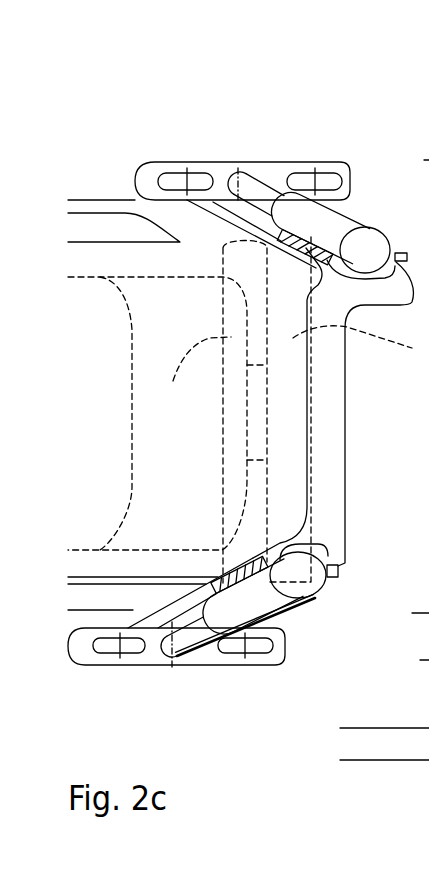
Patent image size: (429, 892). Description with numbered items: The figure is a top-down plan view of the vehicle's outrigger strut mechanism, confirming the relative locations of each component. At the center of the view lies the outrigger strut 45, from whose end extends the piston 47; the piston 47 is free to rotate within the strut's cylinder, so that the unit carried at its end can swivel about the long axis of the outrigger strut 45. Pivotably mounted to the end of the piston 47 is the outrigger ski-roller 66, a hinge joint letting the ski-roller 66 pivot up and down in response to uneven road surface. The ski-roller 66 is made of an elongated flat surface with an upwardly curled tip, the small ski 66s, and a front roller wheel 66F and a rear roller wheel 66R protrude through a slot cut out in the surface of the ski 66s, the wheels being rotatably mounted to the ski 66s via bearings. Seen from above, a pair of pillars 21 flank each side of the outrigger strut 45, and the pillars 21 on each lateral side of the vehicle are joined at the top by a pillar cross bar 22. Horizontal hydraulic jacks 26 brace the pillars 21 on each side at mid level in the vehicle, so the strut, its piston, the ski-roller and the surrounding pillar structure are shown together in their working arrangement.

The pillars 21 is at (195, 591).
The pillar cross bar 22 is at (340, 483).
The horizontal hydraulic jacks 26 is at (183, 362).
The outrigger strut 45 is at (361, 192).
The piston 47 is at (177, 657).
The outrigger ski-roller 66 is at (222, 689).
The front roller wheel 66F is at (100, 652).
The rear roller wheel 66R is at (270, 647).
The ski 66s is at (203, 660).